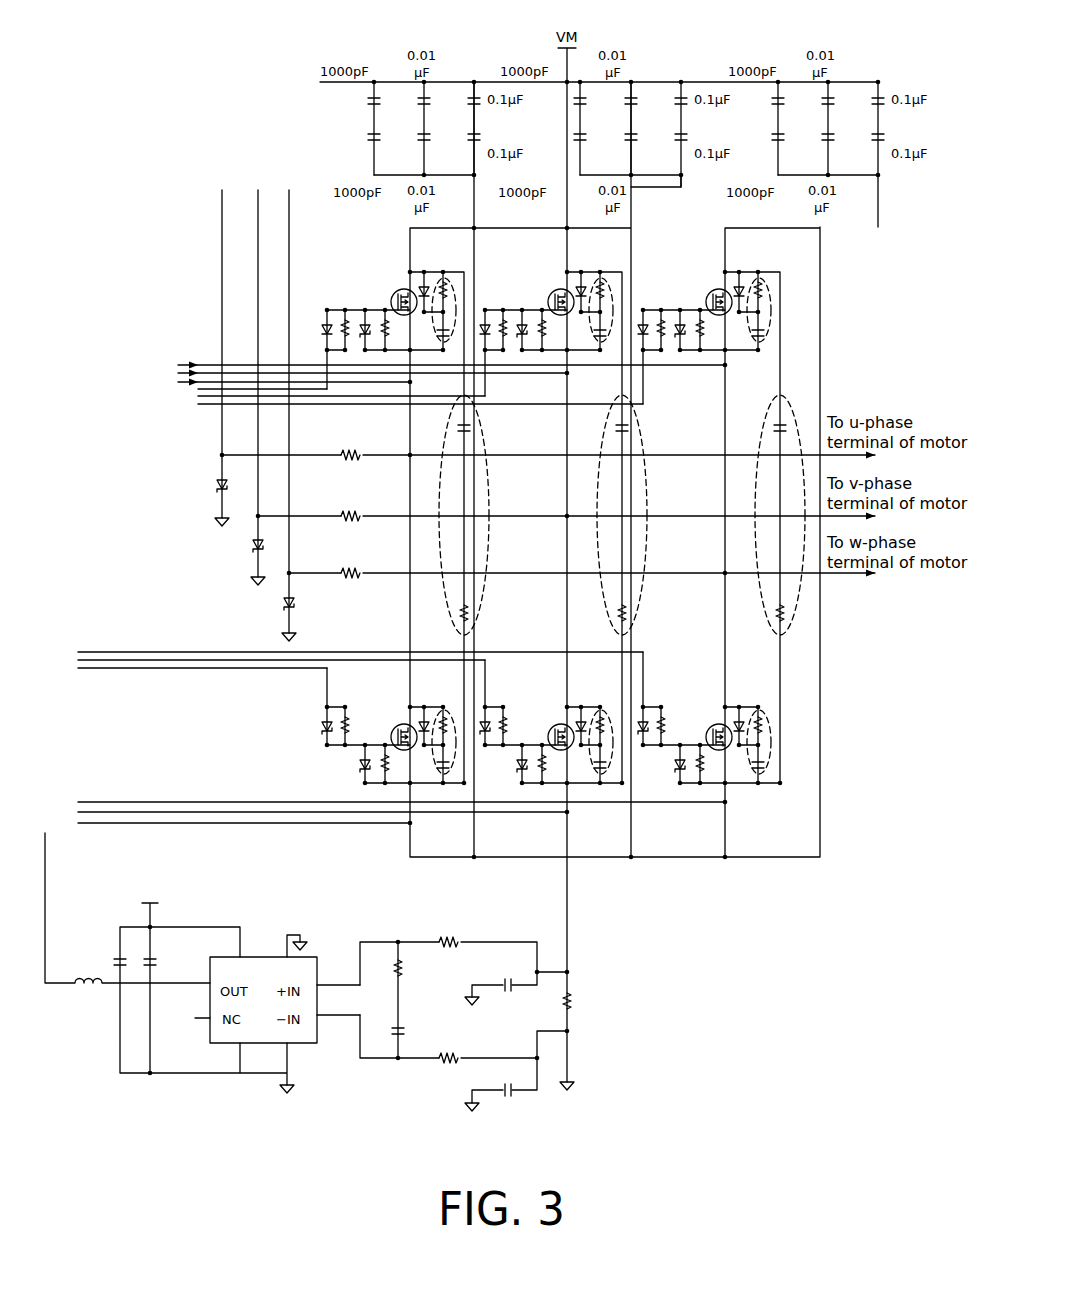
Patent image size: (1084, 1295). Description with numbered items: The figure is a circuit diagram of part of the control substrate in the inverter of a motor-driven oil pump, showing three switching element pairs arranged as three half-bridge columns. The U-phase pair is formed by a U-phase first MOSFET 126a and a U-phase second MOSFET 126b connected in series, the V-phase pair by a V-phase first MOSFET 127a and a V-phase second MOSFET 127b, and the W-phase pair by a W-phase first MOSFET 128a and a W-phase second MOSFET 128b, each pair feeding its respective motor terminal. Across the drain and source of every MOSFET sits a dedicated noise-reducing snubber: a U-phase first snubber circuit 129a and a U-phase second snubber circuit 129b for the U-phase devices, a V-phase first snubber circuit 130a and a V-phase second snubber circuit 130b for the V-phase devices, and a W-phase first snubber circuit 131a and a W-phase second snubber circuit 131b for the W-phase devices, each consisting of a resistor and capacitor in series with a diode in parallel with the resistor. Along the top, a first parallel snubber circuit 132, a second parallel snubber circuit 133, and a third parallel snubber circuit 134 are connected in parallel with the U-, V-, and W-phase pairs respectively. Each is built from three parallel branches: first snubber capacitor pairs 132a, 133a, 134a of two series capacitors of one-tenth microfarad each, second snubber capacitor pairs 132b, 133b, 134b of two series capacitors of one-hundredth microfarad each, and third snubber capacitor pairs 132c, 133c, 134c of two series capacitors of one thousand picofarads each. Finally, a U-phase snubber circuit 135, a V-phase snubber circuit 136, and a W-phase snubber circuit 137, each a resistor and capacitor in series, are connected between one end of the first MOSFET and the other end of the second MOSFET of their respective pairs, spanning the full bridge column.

The U-phase first MOSFET 126a is at (392, 294).
The U-phase second MOSFET 126b is at (392, 728).
The V-phase first MOSFET 127a is at (549, 294).
The V-phase second MOSFET 127b is at (549, 728).
The W-phase first MOSFET 128a is at (707, 294).
The W-phase second MOSFET 128b is at (707, 728).
The U-phase first snubber circuit 129a is at (448, 280).
The U-phase second snubber circuit 129b is at (445, 712).
The V-phase first snubber circuit 130a is at (605, 280).
The V-phase second snubber circuit 130b is at (602, 712).
The W-phase first snubber circuit 131a is at (763, 280).
The W-phase second snubber circuit 131b is at (760, 712).
The first parallel snubber circuit 132 is at (392, 129).
The first snubber capacitor pair 132a is at (389, 127).
The second snubber capacitor pair 132b is at (439, 129).
The third snubber capacitor pair 132c is at (473, 134).
The second parallel snubber circuit 133 is at (599, 133).
The first snubber capacitor pair 133a is at (595, 127).
The second snubber capacitor pair 133b is at (645, 129).
The third snubber capacitor pair 133c is at (678, 134).
The third parallel snubber circuit 134 is at (799, 153).
The first snubber capacitor pair 134a is at (793, 127).
The second snubber capacitor pair 134b is at (843, 129).
The third snubber capacitor pair 134c is at (876, 134).
The U-phase snubber circuit 135 is at (486, 439).
The V-phase snubber circuit 136 is at (644, 439).
The W-phase snubber circuit 137 is at (758, 425).